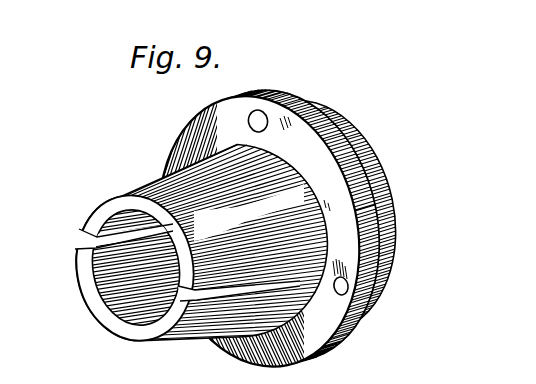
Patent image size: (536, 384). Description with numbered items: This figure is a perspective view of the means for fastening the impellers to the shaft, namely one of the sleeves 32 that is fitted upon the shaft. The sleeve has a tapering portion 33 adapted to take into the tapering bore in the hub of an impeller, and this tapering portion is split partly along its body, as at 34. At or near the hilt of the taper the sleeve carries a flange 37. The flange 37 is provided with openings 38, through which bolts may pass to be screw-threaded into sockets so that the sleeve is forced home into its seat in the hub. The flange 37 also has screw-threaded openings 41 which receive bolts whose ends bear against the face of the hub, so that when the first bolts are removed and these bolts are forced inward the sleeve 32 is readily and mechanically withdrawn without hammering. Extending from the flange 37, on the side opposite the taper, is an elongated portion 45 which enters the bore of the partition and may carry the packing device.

The sleeve 32 is at (110, 320).
The tapering portion 33 is at (172, 318).
The split 34 is at (74, 229).
The flange 37 is at (296, 97).
The openings 38 is at (241, 113).
The screw-threaded openings 41 is at (329, 286).
The elongated portion 45 is at (358, 148).